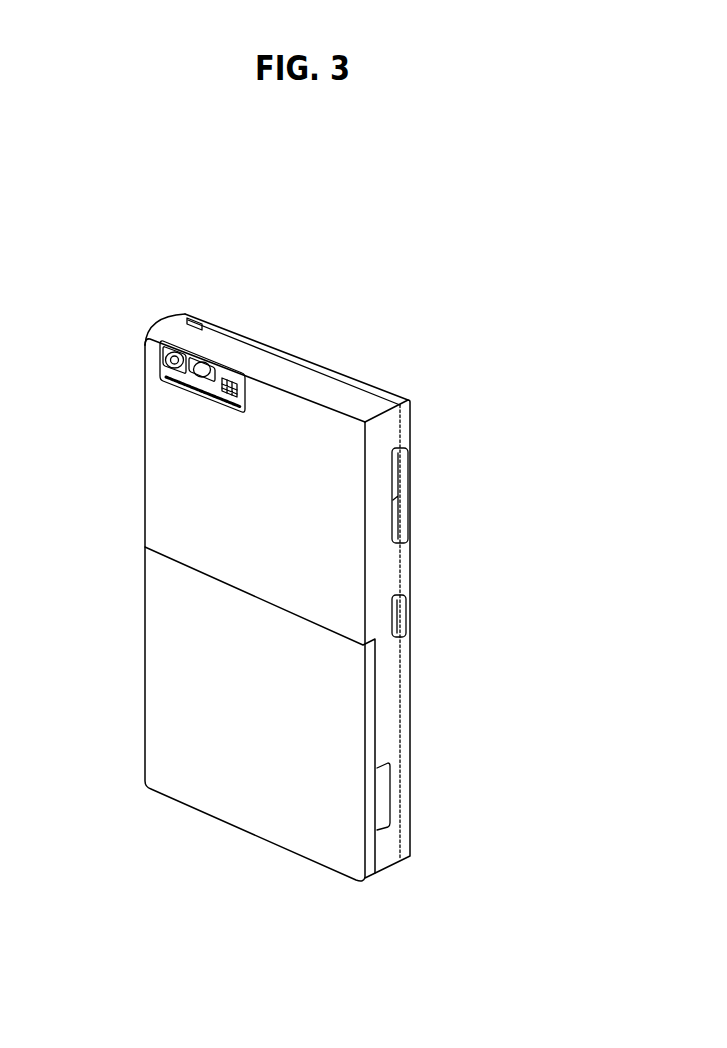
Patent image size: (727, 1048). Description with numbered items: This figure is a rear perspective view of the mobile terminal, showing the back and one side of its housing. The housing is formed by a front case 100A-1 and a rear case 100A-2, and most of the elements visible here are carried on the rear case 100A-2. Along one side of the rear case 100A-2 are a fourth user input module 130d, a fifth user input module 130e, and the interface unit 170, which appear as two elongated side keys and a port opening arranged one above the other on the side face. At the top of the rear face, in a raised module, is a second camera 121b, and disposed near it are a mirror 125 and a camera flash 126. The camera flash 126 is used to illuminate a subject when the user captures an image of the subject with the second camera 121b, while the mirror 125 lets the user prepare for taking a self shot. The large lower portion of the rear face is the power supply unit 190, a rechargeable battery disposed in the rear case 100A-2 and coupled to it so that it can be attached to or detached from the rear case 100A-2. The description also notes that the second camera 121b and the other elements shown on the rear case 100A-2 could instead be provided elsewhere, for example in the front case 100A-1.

The rear case 100A-2 is at (172, 328).
The front case 100A-1 is at (210, 313).
The mirror 125 is at (167, 362).
The second camera 121b is at (198, 365).
The camera flash 126 is at (233, 377).
The fourth user input module 130d is at (402, 468).
The fifth user input module 130e is at (398, 610).
The power supply unit 190 is at (163, 666).
The interface unit 170 is at (383, 802).